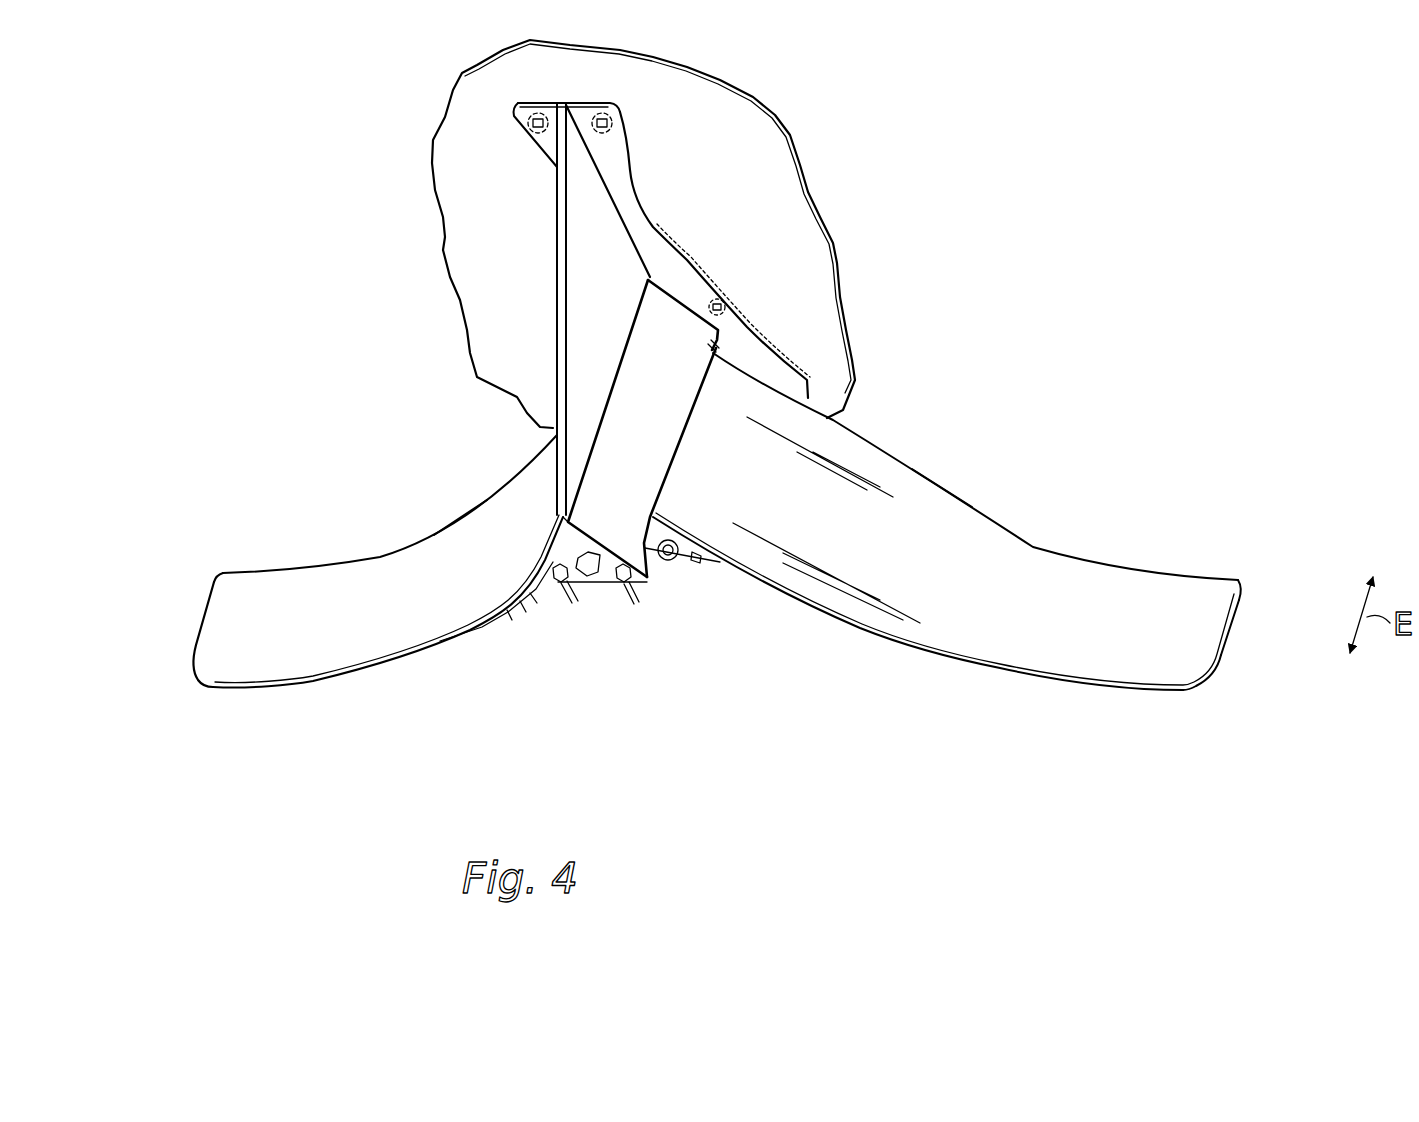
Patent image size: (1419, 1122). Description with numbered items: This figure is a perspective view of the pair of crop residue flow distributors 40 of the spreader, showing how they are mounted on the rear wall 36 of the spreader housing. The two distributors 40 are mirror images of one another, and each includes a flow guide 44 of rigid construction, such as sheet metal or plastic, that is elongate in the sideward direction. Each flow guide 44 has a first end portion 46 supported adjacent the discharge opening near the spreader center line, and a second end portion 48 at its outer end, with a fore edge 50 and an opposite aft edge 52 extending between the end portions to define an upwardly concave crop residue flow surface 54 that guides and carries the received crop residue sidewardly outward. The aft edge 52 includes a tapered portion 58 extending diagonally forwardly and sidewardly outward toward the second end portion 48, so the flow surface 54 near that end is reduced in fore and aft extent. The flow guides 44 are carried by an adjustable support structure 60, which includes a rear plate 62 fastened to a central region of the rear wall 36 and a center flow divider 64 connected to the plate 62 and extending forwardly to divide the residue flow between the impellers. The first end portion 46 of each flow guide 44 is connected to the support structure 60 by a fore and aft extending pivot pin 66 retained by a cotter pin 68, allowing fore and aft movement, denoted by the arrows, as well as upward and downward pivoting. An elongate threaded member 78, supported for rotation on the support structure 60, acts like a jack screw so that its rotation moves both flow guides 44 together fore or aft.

The rear wall 36 is at (800, 157).
The crop residue flow distributor 40 is at (222, 572).
The flow guide 44 is at (403, 657).
The first end portion 46 is at (688, 408).
The second end portion 48 is at (202, 622).
The fore edge 50 is at (353, 677).
The aft edge 52 is at (380, 553).
The crop residue flow surface 54 is at (343, 603).
The tapered portion 58 is at (457, 517).
The adjustable support structure 60 is at (662, 213).
The rear plate 62 is at (700, 275).
The center flow divider 64 is at (557, 295).
The pivot pin 66 is at (557, 588).
The cotter pin 68 is at (572, 603).
The threaded member 78 is at (615, 533).